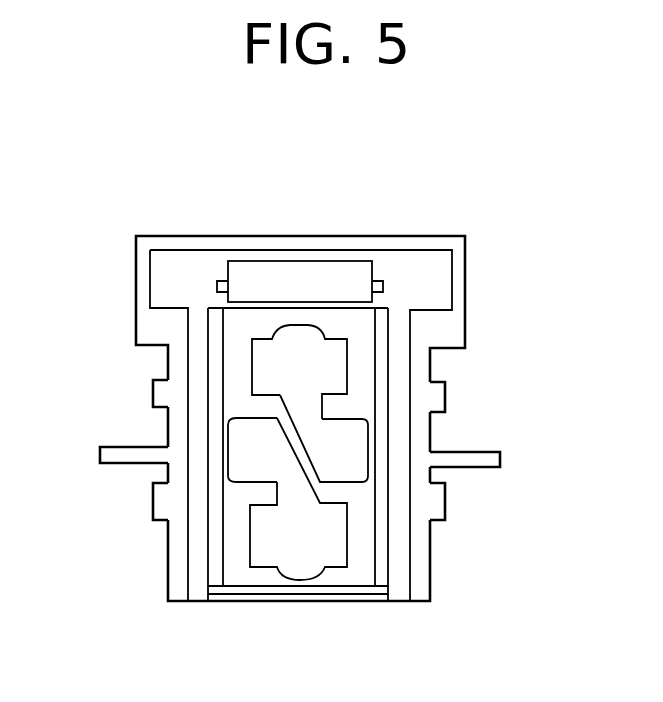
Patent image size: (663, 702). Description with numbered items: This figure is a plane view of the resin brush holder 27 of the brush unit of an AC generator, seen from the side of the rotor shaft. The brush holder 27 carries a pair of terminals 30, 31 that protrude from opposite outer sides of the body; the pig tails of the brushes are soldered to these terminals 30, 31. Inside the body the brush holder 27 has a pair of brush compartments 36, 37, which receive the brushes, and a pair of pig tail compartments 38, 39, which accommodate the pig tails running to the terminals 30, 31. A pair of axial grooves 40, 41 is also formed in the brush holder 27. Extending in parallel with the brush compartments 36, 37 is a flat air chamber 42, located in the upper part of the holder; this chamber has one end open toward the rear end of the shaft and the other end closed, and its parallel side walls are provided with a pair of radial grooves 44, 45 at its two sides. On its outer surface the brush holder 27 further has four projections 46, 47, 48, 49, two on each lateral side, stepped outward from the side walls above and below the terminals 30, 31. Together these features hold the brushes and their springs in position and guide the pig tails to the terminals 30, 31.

The brush holder 27 is at (209, 601).
The terminal 30 is at (130, 455).
The terminal 31 is at (468, 460).
The brush compartment 36 is at (337, 367).
The brush compartment 37 is at (335, 555).
The pig tail compartment 38 is at (358, 457).
The pig tail compartment 39 is at (250, 460).
The axial groove 40 is at (400, 588).
The axial groove 41 is at (195, 565).
The flat air chamber 42 is at (337, 277).
The radial groove 44 is at (383, 286).
The radial groove 45 is at (217, 286).
The projection 46 is at (155, 393).
The projection 47 is at (158, 503).
The projection 48 is at (445, 397).
The projection 49 is at (440, 505).